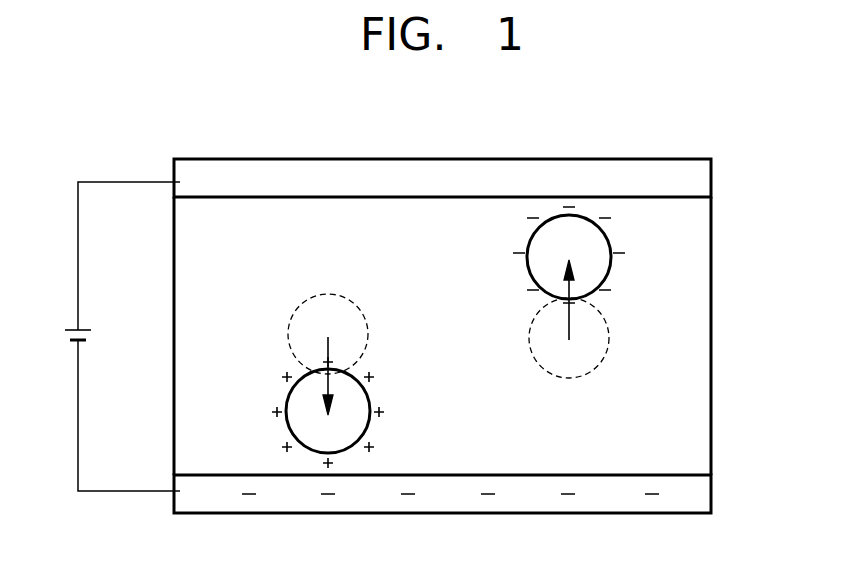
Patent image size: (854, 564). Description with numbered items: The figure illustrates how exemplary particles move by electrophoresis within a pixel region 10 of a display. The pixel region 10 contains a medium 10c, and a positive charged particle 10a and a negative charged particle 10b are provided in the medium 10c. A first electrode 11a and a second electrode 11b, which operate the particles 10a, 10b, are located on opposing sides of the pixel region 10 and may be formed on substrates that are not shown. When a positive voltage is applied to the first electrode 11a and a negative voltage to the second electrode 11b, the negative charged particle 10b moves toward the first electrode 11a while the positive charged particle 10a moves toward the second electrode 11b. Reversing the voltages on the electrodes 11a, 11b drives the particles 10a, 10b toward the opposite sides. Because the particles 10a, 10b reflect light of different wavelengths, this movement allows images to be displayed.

The pixel region 10 is at (164, 197).
The positive charged particle 10a is at (270, 385).
The negative charged particle 10b is at (510, 283).
The medium 10c is at (705, 350).
The first electrode 11a is at (705, 173).
The second electrode 11b is at (705, 498).